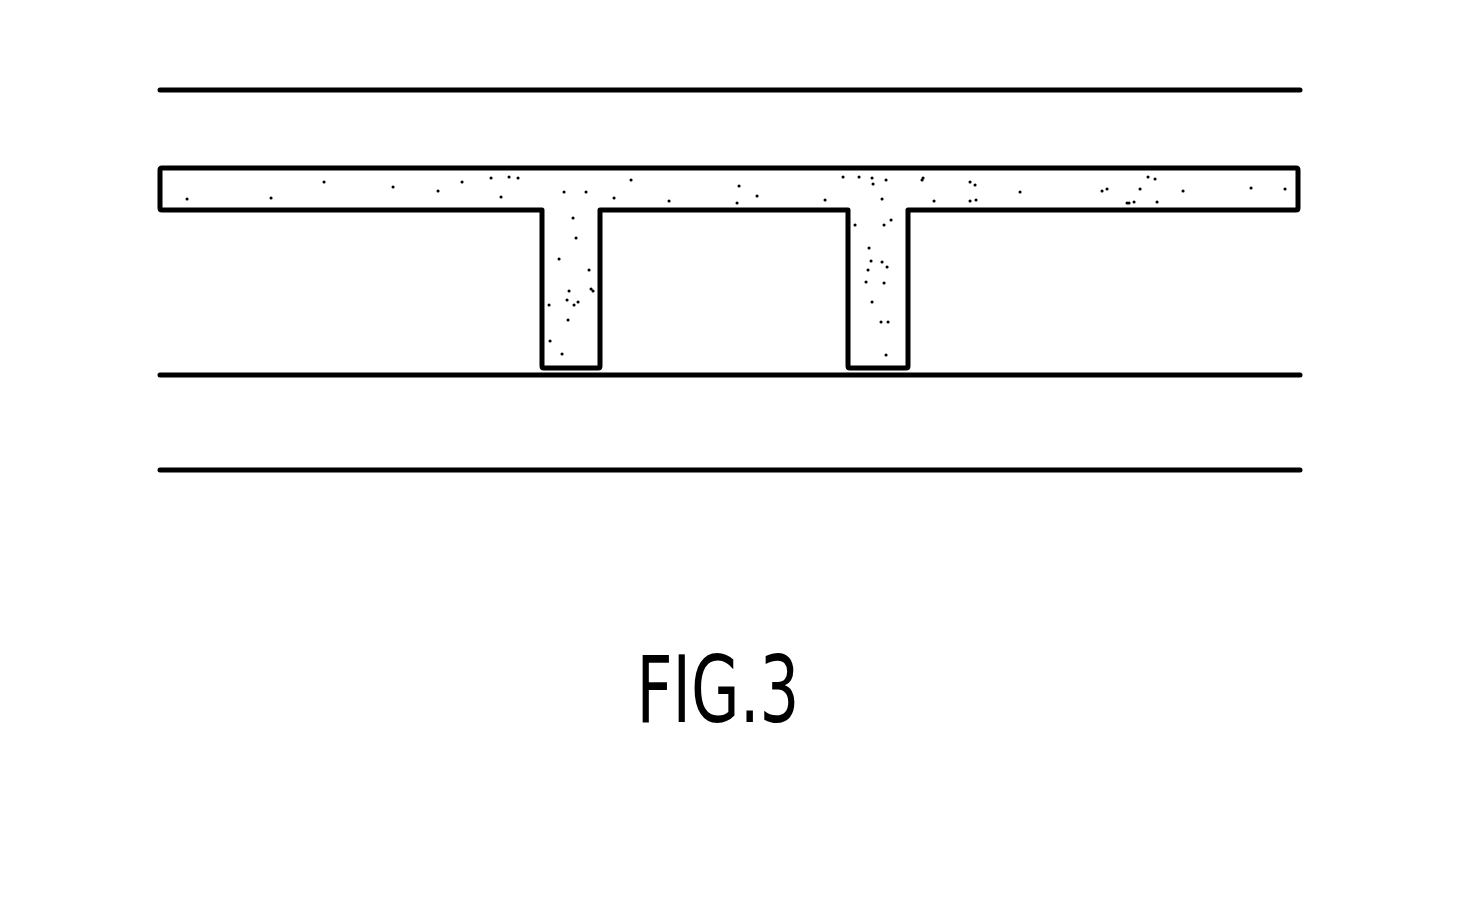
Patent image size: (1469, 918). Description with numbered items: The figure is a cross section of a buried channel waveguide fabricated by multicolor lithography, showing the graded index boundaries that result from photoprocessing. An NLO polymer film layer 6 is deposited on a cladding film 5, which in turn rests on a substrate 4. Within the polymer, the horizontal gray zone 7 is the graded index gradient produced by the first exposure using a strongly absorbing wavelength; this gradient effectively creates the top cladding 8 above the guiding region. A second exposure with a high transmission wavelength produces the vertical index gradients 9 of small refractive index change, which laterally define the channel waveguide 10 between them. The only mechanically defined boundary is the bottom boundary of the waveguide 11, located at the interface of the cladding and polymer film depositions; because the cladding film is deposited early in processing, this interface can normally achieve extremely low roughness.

The substrate 4 is at (1257, 523).
The cladding film 5 is at (1258, 427).
The NLO polymer film layer 6 is at (1263, 283).
The horizontal gray zone 7 is at (236, 187).
The top cladding 8 is at (993, 140).
The vertical index gradients 9 is at (540, 268).
The channel waveguide 10 is at (748, 253).
The bottom boundary of the waveguide 11 is at (685, 375).